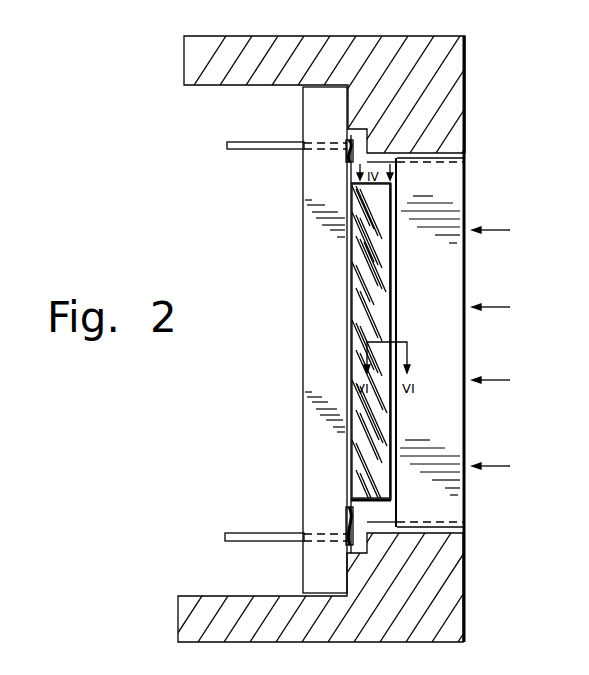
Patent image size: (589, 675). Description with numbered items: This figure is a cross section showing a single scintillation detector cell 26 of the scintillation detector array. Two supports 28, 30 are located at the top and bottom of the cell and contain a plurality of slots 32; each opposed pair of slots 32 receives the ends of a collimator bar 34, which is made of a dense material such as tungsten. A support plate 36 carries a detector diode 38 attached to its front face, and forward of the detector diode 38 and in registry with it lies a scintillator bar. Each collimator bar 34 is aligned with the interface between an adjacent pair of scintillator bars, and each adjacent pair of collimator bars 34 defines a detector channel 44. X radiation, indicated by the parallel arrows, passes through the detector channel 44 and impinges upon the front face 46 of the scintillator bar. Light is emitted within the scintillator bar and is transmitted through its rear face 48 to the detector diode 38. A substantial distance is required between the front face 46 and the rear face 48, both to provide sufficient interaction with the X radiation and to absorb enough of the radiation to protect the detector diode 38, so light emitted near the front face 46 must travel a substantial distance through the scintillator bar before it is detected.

The scintillation detector cell 26 is at (508, 569).
The support 28 is at (445, 86).
The support 30 is at (462, 602).
The slot 32 is at (455, 153).
The collimator bar 34 is at (445, 349).
The support plate 36 is at (332, 387).
The detector diode 38 is at (353, 313).
The detector channel 44 is at (430, 396).
The front face 46 is at (393, 277).
The rear face 48 is at (350, 202).